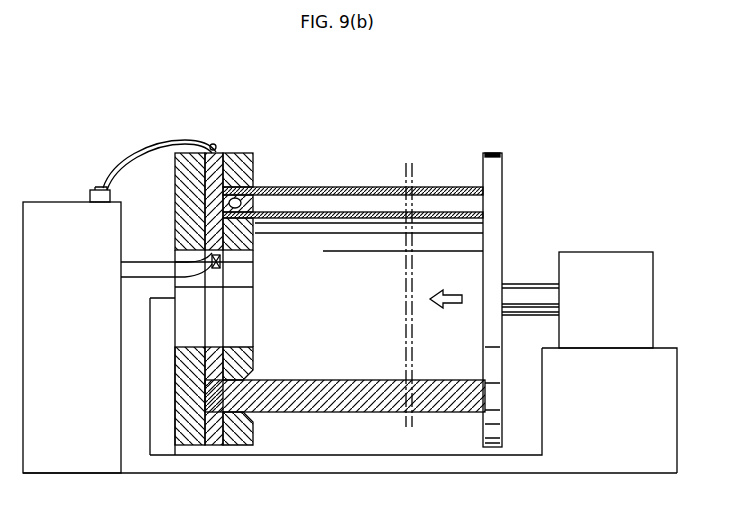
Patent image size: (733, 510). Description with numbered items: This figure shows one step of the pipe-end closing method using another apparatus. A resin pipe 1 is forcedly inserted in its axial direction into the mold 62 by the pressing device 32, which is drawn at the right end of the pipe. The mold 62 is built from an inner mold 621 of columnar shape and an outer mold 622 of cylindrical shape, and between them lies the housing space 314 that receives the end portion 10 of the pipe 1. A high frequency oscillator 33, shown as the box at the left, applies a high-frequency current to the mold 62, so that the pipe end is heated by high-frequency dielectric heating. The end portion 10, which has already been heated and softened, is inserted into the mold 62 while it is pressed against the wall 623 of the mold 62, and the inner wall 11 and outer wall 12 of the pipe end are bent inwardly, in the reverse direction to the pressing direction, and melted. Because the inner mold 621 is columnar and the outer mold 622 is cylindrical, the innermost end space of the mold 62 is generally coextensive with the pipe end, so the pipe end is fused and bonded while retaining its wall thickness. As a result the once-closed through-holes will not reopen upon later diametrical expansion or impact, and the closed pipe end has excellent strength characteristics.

The resin pipe 1 is at (383, 186).
The end portion of the pipe 10 is at (230, 172).
The inner wall 11 is at (321, 210).
The outer wall 12 is at (343, 188).
The housing space 314 is at (242, 240).
The pressing device 32 is at (598, 251).
The high frequency oscillator 33 is at (53, 205).
The mold 62 is at (248, 72).
The inner mold 621 is at (207, 236).
The outer mold 622 is at (228, 152).
The wall 623 is at (176, 173).